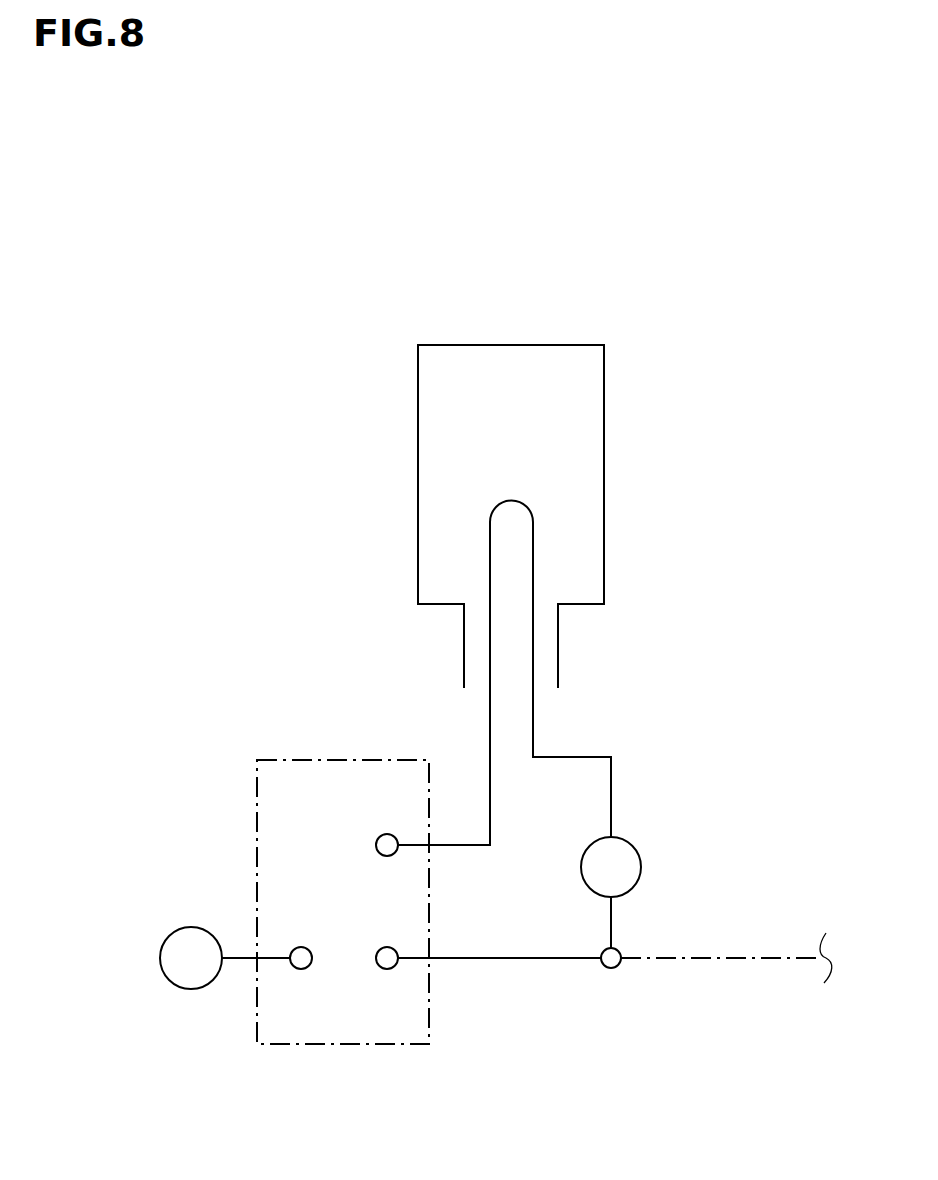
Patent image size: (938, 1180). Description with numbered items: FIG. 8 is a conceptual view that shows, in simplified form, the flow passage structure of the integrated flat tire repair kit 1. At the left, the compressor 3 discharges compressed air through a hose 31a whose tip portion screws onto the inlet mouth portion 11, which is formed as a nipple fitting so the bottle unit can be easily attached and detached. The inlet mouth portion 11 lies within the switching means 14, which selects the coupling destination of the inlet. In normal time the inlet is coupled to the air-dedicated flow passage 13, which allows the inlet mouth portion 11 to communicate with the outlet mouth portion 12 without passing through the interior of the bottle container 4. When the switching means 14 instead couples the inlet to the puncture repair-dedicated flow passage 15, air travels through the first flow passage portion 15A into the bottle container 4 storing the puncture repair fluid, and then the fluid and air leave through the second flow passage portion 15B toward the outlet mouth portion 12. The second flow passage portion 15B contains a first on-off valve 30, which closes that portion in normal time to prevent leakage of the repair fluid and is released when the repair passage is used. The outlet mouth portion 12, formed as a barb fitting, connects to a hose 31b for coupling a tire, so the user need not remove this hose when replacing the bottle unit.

The integrated flat tire repair kit 1 is at (639, 358).
The bottle container 4 is at (605, 473).
The puncture repair-dedicated flow passage 15 is at (752, 693).
The first flow passage portion 15A is at (491, 720).
The second flow passage portion 15B is at (575, 757).
The first on-off valve 30 is at (633, 845).
The outlet mouth portion 12 is at (600, 968).
The air-dedicated flow passage 13 is at (481, 962).
The hose for coupling a tire 31b is at (705, 962).
The switching means 14 is at (282, 757).
The inlet mouth portion 11 is at (296, 968).
The compressor 3 is at (185, 988).
The hose 31a is at (240, 955).